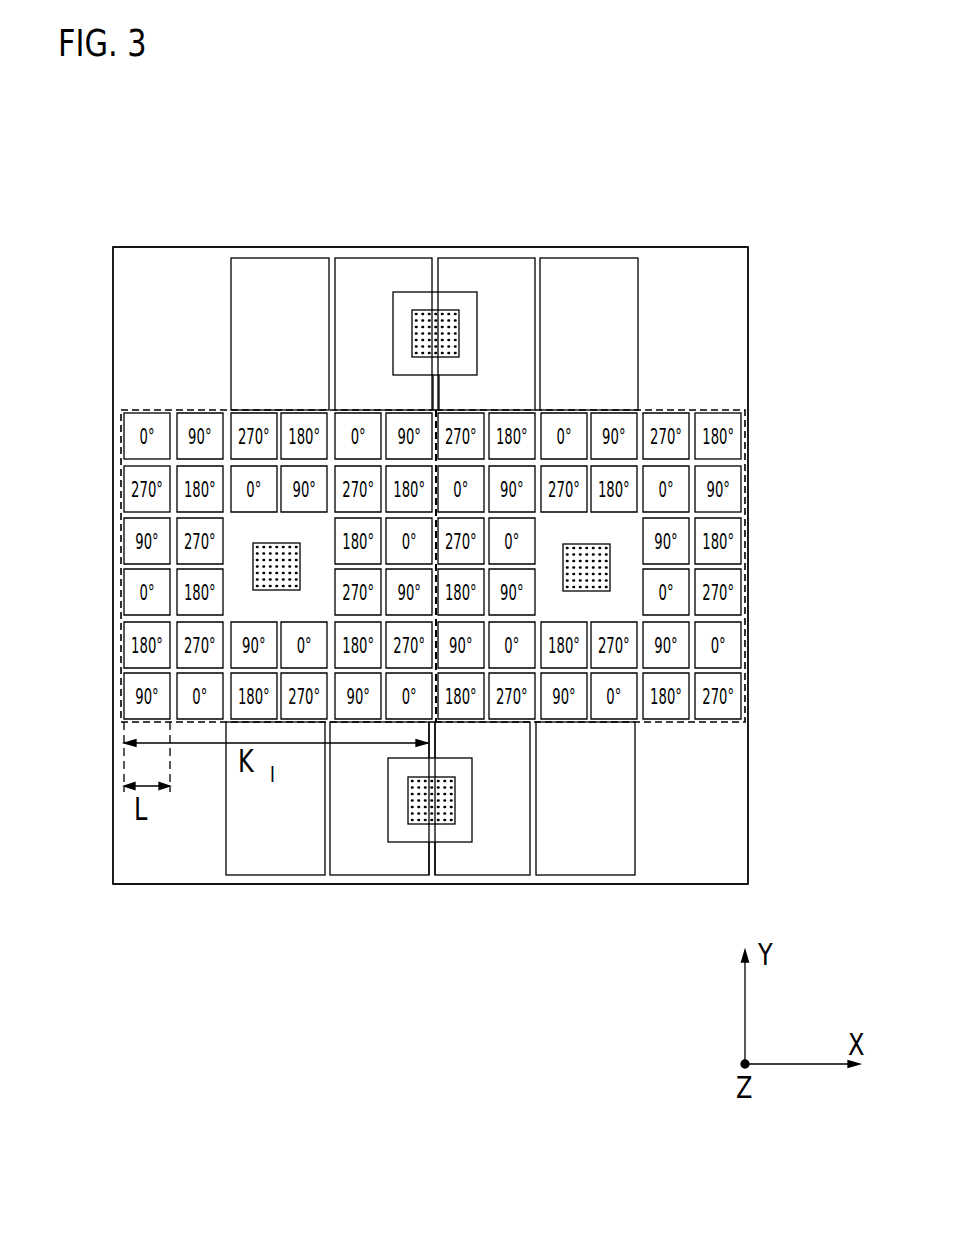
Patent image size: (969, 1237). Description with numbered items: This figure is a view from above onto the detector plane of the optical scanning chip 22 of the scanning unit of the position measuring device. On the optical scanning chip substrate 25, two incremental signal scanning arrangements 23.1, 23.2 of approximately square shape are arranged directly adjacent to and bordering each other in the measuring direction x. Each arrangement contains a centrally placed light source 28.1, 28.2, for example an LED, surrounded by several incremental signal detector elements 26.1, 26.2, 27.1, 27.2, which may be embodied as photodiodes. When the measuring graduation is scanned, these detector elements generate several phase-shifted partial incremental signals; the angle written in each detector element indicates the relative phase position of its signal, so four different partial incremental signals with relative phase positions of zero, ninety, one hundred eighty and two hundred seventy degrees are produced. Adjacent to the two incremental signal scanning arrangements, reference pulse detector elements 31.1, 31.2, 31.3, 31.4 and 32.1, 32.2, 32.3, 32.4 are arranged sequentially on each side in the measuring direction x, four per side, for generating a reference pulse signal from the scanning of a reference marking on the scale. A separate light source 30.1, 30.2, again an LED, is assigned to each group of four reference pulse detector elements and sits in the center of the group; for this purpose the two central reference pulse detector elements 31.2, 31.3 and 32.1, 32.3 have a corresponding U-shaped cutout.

The optical scanning chip 22 is at (102, 886).
The incremental signal scanning arrangement 23.1 is at (165, 410).
The incremental signal scanning arrangement 23.2 is at (697, 412).
The optical scanning chip substrate 25 is at (718, 815).
The incremental signal detector element 26.1 is at (133, 447).
The incremental signal detector element 26.2 is at (140, 505).
The incremental signal detector element 27.1 is at (720, 452).
The incremental signal detector element 27.2 is at (725, 500).
The light source 28.1 is at (268, 568).
The light source 28.2 is at (590, 565).
The light source 30.1 is at (430, 805).
The light source 30.2 is at (436, 340).
The reference pulse detector element 31.1 is at (280, 845).
The reference pulse detector element 31.2 is at (365, 838).
The reference pulse detector element 31.3 is at (502, 850).
The reference pulse detector element 31.4 is at (588, 842).
The reference pulse detector element 32.1 is at (292, 297).
The reference pulse detector element 32.2 is at (374, 282).
The reference pulse detector element 32.3 is at (505, 298).
The reference pulse detector element 32.4 is at (597, 298).